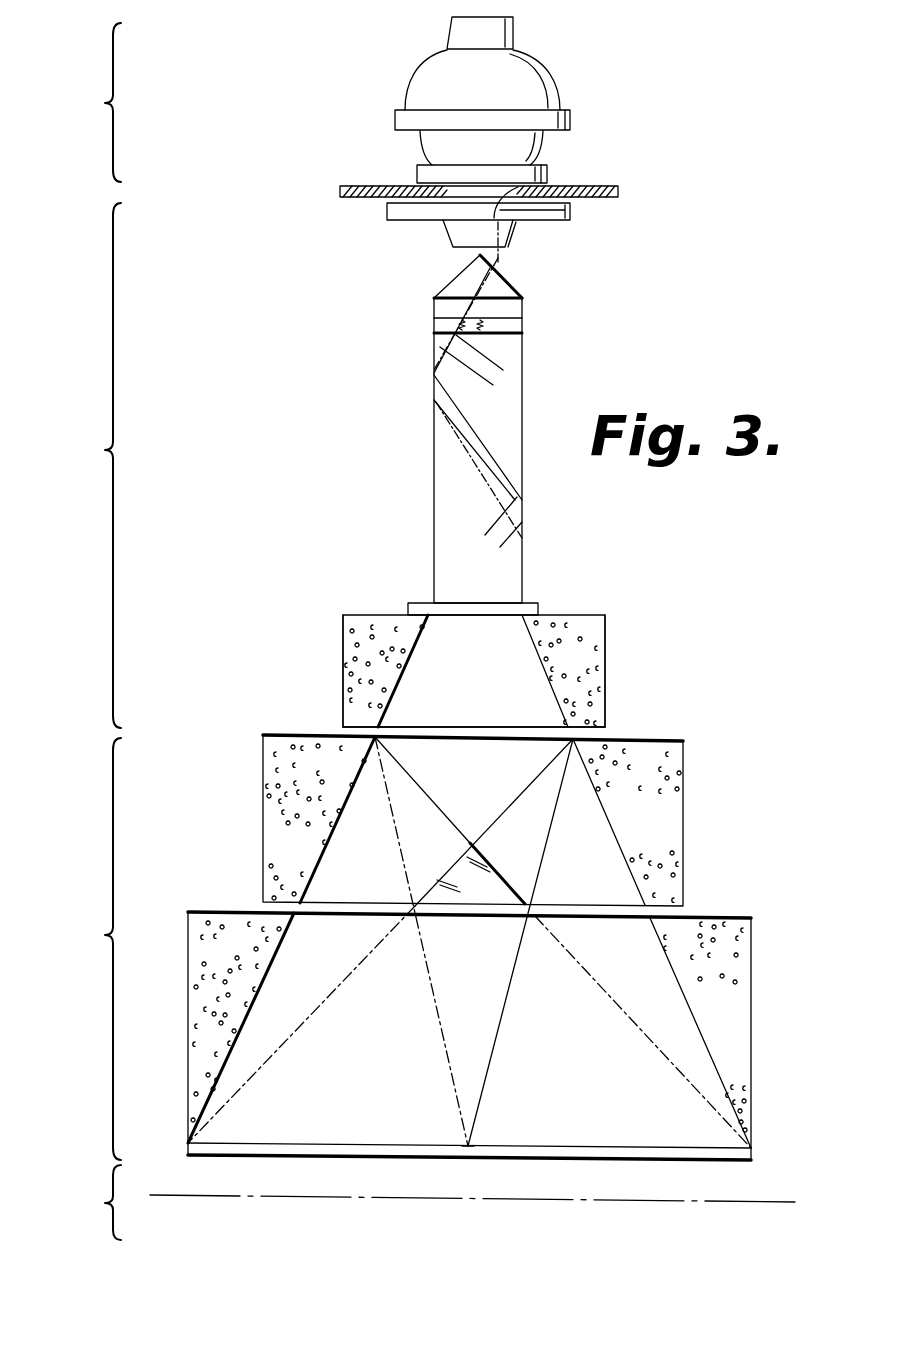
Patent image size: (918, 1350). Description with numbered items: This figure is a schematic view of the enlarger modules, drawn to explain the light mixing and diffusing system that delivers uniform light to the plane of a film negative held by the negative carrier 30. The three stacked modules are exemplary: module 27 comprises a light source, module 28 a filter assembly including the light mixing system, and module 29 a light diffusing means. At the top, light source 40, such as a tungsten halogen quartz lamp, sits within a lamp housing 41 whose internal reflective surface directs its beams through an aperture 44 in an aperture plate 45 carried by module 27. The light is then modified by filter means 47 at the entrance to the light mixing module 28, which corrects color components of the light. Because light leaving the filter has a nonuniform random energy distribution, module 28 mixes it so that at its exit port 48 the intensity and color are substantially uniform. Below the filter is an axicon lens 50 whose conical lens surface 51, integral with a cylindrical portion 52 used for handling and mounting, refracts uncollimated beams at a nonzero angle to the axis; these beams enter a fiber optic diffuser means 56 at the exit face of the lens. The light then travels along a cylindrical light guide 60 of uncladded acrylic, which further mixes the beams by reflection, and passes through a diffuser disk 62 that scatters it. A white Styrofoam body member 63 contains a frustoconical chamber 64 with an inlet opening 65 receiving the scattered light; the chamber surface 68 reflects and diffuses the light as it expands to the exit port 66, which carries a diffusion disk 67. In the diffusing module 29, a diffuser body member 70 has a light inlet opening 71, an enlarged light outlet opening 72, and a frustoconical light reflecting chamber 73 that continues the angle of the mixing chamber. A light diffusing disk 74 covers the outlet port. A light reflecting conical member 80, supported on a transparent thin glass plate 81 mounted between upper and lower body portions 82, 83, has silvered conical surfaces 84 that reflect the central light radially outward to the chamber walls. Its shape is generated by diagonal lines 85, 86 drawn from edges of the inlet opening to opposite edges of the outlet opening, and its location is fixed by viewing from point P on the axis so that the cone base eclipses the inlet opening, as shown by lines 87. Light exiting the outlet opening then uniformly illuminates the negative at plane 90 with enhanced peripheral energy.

The light source module 27 is at (90, 102).
The light mixing module 28 is at (88, 465).
The light diffusing module 29 is at (87, 949).
The negative carrier 30 is at (87, 1202).
The light source 40 is at (430, 62).
The lamp housing 41 is at (530, 80).
The aperture 44 is at (503, 218).
The aperture plate 45 is at (600, 185).
The filter means 47 is at (388, 215).
The exit port 48 is at (388, 712).
The axicon lens 50 is at (434, 308).
The conical lens surface 51 is at (458, 280).
The cylindrical portion 52 is at (527, 306).
The fiber optic diffuser means 56 is at (505, 336).
The cylindrical light guide 60 is at (434, 445).
The diffuser disk 62 is at (527, 600).
The body member 63 is at (603, 643).
The frustoconical chamber 64 is at (527, 636).
The inlet opening 65 is at (437, 620).
The exit port 66 is at (560, 717).
The diffusion disk 67 is at (600, 736).
The chamber surface 68 is at (410, 663).
The diffuser body member 70 is at (683, 778).
The light inlet opening 71 is at (553, 748).
The light outlet opening 72 is at (725, 1107).
The light reflecting chamber 73 is at (617, 863).
The light diffusing disk 74 is at (575, 1160).
The light reflecting conical member 80 is at (493, 893).
The transparent thin glass plate 81 is at (670, 914).
The upper body portion 82 is at (270, 785).
The lower body portion 83 is at (213, 928).
The reflective silvered conical surface 84 is at (450, 870).
The diagonal line 85 is at (452, 760).
The diagonal line 86 is at (308, 1022).
The eclipse lines 87 is at (435, 1032).
The film negative plane 90 is at (355, 1198).
The axial point P is at (470, 1140).